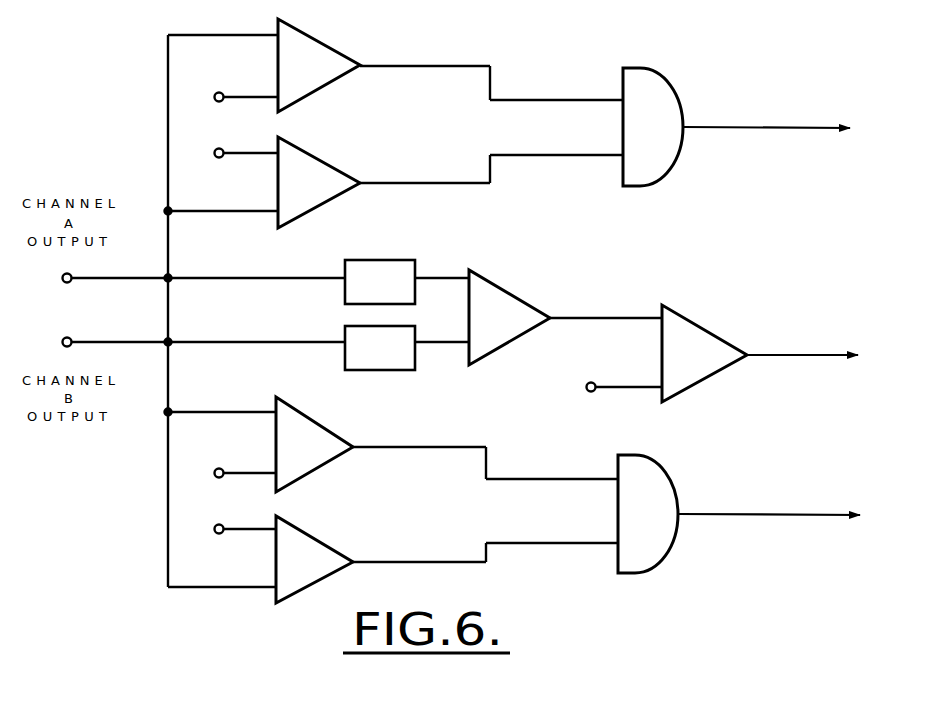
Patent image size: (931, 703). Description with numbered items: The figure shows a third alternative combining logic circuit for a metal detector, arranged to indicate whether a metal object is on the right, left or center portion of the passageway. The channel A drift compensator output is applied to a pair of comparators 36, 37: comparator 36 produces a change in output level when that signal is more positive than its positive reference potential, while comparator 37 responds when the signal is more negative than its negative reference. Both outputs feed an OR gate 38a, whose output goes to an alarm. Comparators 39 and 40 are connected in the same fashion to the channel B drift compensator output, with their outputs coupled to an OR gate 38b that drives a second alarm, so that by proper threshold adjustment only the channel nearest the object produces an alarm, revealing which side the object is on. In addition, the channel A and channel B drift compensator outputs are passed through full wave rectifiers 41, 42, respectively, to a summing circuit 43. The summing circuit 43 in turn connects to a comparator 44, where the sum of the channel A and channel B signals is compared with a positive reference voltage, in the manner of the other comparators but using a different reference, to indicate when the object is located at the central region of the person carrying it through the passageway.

The comparator 36 is at (317, 37).
The comparator 37 is at (317, 156).
The OR gate 38a is at (668, 90).
The OR gate 38b is at (660, 475).
The comparator 39 is at (332, 462).
The comparator 40 is at (322, 542).
The full wave rectifier 41 is at (380, 260).
The full wave rectifier 42 is at (380, 370).
The summing circuit 43 is at (498, 287).
The comparator 44 is at (703, 328).